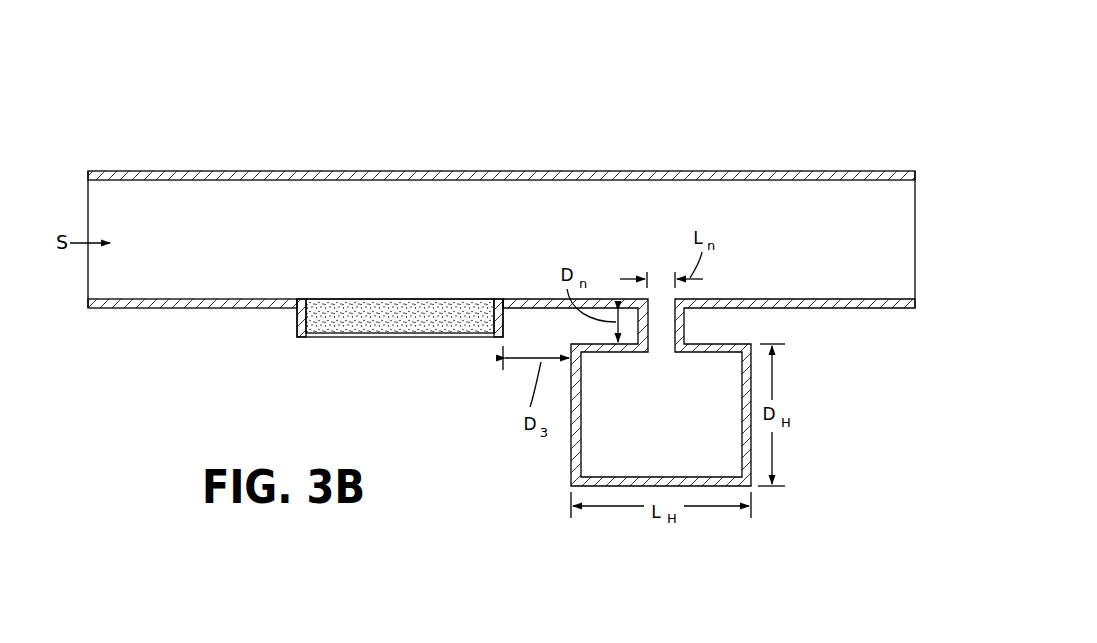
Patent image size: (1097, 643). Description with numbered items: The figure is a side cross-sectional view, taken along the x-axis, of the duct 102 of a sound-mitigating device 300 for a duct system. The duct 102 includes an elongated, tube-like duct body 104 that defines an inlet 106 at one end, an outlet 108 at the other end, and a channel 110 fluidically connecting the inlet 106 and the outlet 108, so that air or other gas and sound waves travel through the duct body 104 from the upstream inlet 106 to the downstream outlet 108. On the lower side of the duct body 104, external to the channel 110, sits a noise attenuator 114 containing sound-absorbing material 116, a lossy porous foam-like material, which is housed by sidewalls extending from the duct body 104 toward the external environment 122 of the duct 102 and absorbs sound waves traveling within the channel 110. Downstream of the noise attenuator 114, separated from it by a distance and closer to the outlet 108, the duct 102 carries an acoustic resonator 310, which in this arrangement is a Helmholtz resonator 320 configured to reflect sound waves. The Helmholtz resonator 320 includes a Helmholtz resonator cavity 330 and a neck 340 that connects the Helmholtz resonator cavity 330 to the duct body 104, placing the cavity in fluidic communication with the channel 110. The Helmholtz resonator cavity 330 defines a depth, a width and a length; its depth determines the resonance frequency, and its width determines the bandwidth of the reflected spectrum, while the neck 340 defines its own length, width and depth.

The sound-mitigating device 300 is at (539, 84).
The duct 102 is at (462, 171).
The duct body 104 is at (571, 171).
The inlet 106 is at (88, 171).
The outlet 108 is at (915, 171).
The channel 110 is at (892, 233).
The noise attenuator 114 is at (358, 337).
The sound-absorbing material 116 is at (460, 331).
The external environment 122 is at (852, 418).
The acoustic resonator 310 is at (592, 486).
The Helmholtz resonator 320 is at (718, 486).
The Helmholtz resonator cavity 330 is at (707, 459).
The neck 340 is at (683, 335).